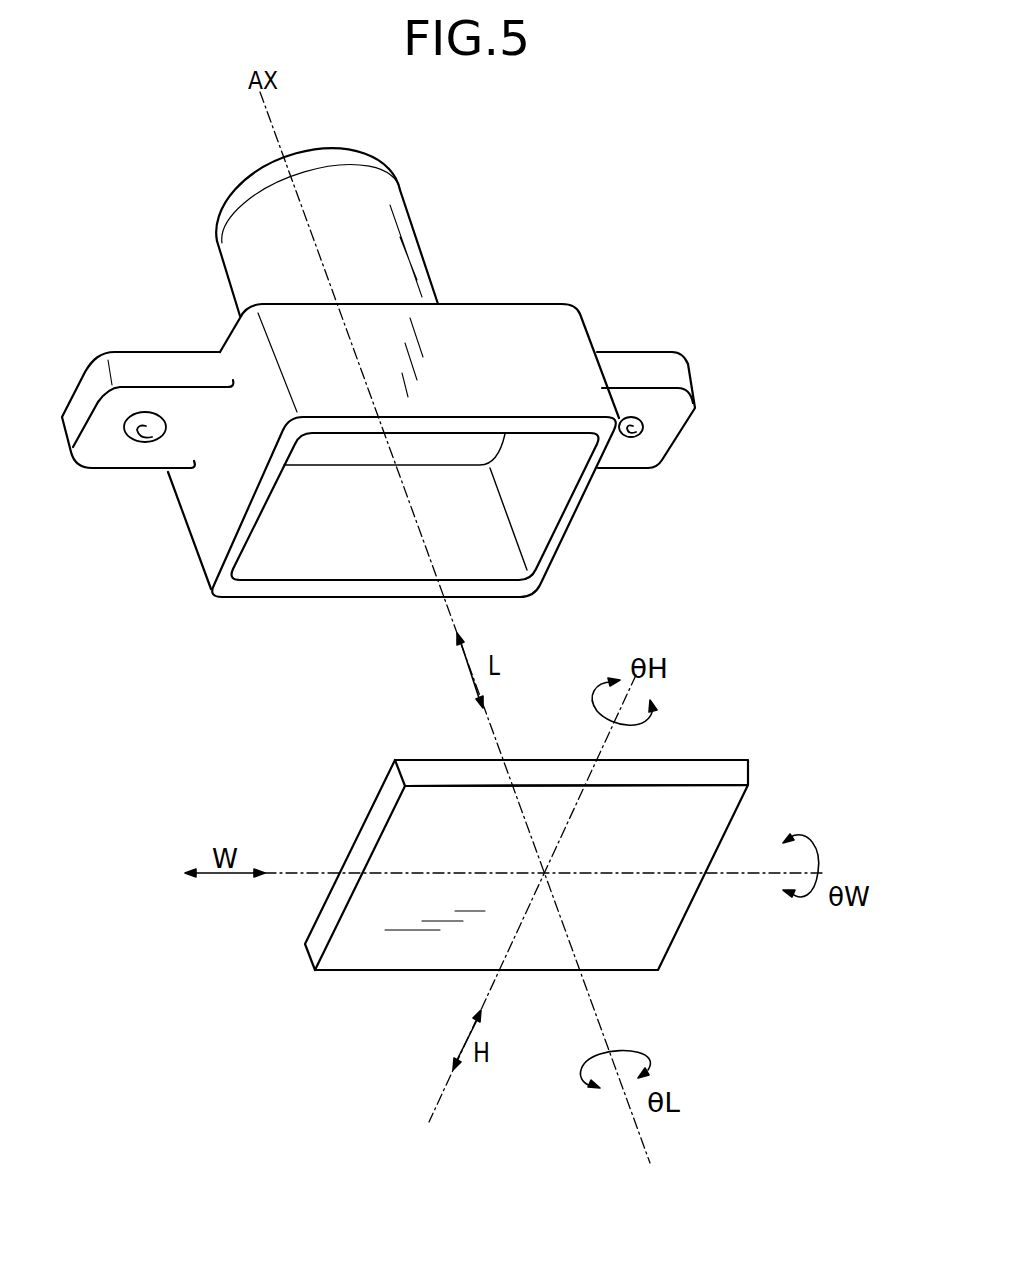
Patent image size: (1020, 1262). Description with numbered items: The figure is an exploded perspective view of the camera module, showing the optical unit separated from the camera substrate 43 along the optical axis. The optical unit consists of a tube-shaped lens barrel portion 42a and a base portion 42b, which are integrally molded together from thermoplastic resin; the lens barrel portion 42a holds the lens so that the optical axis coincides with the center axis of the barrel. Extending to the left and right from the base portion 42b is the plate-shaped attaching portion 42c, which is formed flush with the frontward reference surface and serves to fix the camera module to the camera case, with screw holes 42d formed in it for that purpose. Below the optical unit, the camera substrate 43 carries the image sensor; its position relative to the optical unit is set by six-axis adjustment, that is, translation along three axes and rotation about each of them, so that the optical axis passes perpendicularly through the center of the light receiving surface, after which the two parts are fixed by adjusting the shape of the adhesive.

The lens barrel portion 42a is at (410, 215).
The base portion 42b is at (527, 299).
The attaching portion 42c is at (147, 352).
The screw holes 42d is at (640, 433).
The camera substrate 43 is at (689, 760).